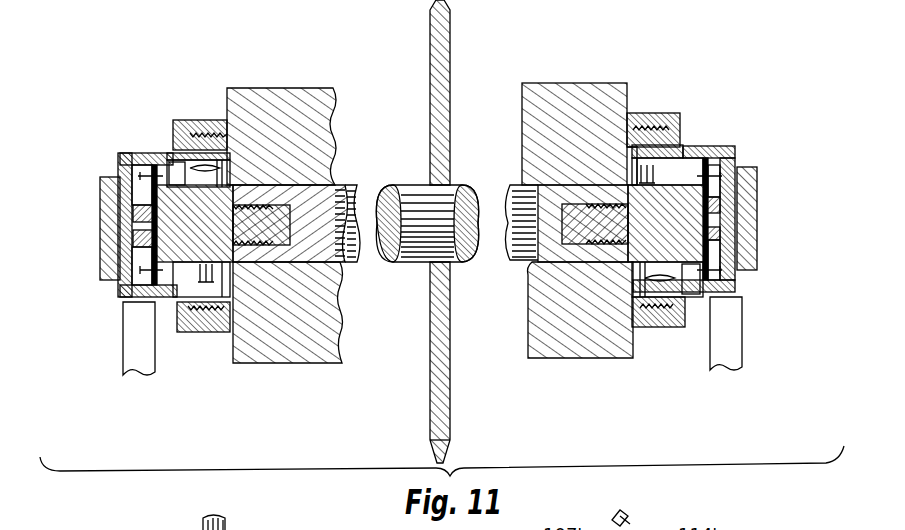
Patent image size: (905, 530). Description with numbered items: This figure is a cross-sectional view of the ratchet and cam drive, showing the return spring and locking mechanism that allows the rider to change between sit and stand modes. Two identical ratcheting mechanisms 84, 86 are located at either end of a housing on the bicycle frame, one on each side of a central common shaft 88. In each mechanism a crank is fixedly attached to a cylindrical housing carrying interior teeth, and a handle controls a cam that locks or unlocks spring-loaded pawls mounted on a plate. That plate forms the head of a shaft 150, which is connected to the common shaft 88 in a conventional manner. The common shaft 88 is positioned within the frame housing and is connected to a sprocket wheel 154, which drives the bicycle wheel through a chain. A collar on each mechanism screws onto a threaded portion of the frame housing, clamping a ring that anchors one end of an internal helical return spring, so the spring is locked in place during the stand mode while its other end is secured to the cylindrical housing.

The ratcheting mechanism 84 is at (134, 104).
The ratcheting mechanism 86 is at (672, 95).
The common shaft 88 is at (393, 185).
The shaft 150 is at (214, 233).
The sprocket wheel 154 is at (430, 61).